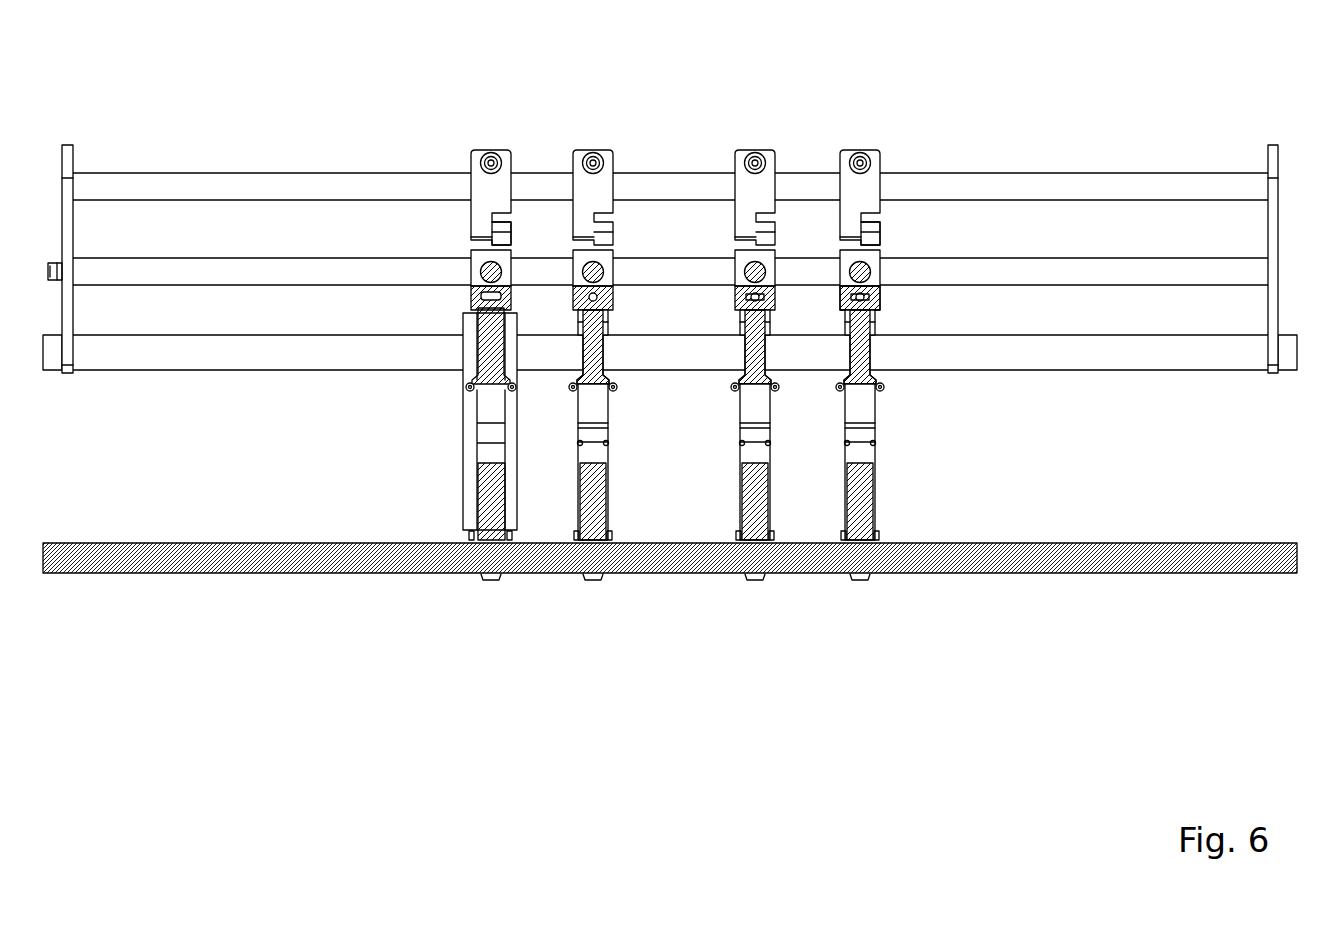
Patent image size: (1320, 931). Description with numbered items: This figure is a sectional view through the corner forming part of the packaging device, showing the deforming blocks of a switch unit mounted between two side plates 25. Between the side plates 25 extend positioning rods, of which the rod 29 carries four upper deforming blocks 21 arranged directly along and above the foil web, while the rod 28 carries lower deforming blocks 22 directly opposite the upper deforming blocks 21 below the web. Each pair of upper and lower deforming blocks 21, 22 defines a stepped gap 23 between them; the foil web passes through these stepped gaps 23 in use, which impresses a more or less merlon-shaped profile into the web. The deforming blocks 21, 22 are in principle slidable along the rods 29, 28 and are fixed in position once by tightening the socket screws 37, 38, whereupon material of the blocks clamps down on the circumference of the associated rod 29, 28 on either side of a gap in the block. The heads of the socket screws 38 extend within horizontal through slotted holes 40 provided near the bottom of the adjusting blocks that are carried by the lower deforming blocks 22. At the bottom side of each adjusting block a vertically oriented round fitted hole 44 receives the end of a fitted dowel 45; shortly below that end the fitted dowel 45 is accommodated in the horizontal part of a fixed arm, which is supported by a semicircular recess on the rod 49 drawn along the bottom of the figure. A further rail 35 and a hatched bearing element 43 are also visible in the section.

The upper deforming block 21 is at (494, 187).
The lower deforming block 22 is at (477, 260).
The stepped gap 23 is at (490, 236).
The side plate 25 is at (68, 200).
The positioning rod 28 is at (280, 275).
The positioning rod 29 is at (288, 186).
The lower rail 35 is at (258, 348).
The socket screw 37 is at (754, 162).
The socket screw 38 is at (755, 297).
The slotted hole 40 is at (880, 292).
The bearing 43 is at (754, 272).
The fitted hole 44 is at (866, 303).
The fitted dowel 45 is at (868, 350).
The rod 49 is at (297, 553).